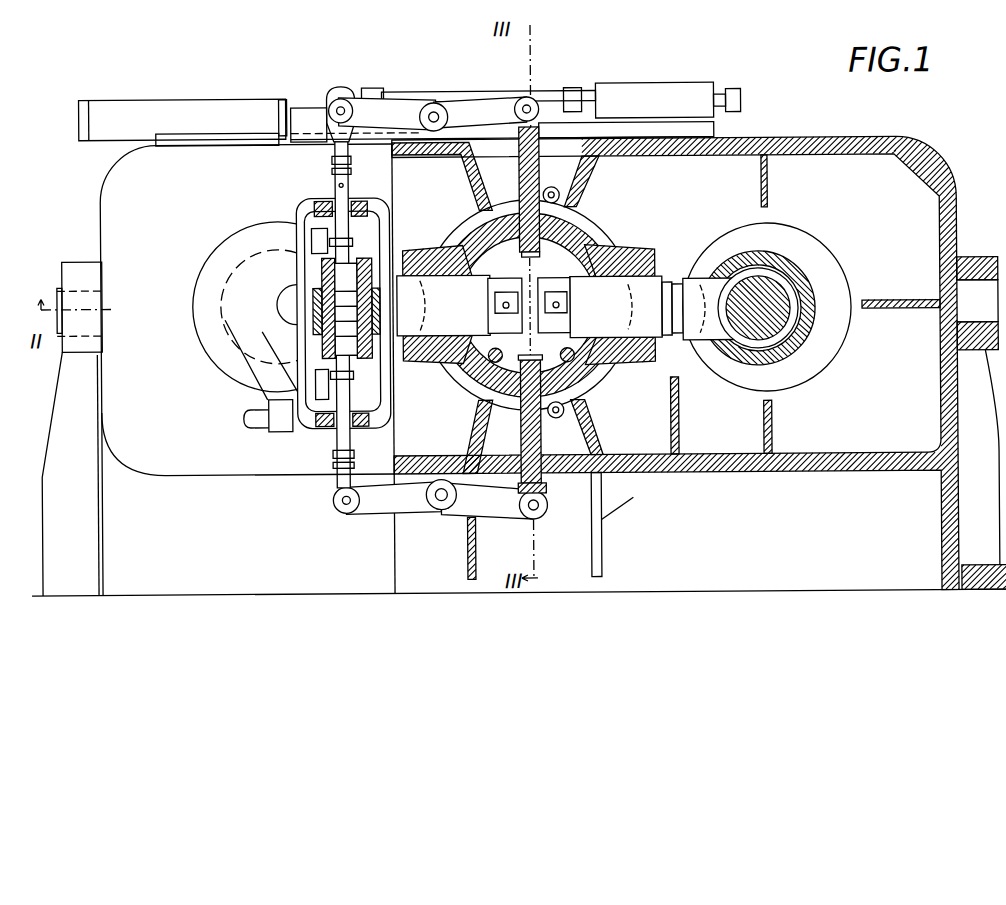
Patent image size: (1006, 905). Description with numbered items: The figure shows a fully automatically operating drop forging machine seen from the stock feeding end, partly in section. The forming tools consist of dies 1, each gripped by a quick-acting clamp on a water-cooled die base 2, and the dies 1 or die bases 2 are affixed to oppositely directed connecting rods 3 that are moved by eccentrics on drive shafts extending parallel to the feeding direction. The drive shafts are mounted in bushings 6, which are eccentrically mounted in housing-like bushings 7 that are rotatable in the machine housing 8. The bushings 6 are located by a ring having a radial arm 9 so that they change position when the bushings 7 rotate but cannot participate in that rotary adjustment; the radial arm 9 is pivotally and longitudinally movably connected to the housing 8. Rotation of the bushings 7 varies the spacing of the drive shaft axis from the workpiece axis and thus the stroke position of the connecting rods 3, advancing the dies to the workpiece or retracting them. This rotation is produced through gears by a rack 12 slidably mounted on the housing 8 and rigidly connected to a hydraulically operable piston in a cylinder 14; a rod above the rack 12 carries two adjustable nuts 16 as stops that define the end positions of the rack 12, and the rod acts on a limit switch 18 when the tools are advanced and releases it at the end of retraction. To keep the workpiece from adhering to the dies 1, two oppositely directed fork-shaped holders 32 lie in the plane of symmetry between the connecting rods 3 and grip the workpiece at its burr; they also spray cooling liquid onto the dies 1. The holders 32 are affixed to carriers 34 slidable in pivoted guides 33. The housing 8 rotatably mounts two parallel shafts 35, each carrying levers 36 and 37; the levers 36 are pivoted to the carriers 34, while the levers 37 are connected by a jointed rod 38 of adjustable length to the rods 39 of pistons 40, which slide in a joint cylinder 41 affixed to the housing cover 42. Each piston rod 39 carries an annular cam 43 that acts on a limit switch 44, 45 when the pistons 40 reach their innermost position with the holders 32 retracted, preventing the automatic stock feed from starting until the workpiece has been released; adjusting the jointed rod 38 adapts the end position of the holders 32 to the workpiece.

The dies 1 is at (550, 278).
The die base 2 is at (555, 280).
The connecting rods 3 is at (470, 330).
The bushings 6 is at (232, 338).
The housing-like bushings 7 is at (842, 270).
The machine housing 8 is at (445, 160).
The radial arm 9 is at (278, 434).
The rack 12 is at (308, 103).
The cylinder 14 is at (232, 103).
The nuts 16 is at (375, 88).
The limit switch 18 is at (740, 92).
The holders 32 is at (525, 262).
The pivoted guides 33 is at (560, 225).
The carriers 34 is at (542, 188).
The parallel shafts 35 is at (440, 112).
The levers 36 is at (496, 106).
The levers 37 is at (403, 106).
The jointed rod 38 is at (350, 159).
The piston rods 39 is at (320, 203).
The pistons 40 is at (345, 270).
The joint cylinder 41 is at (320, 348).
The housing cover 42 is at (340, 481).
The annular cam 43 is at (318, 238).
The limit switch 44 is at (312, 246).
The limit switch 45 is at (345, 414).